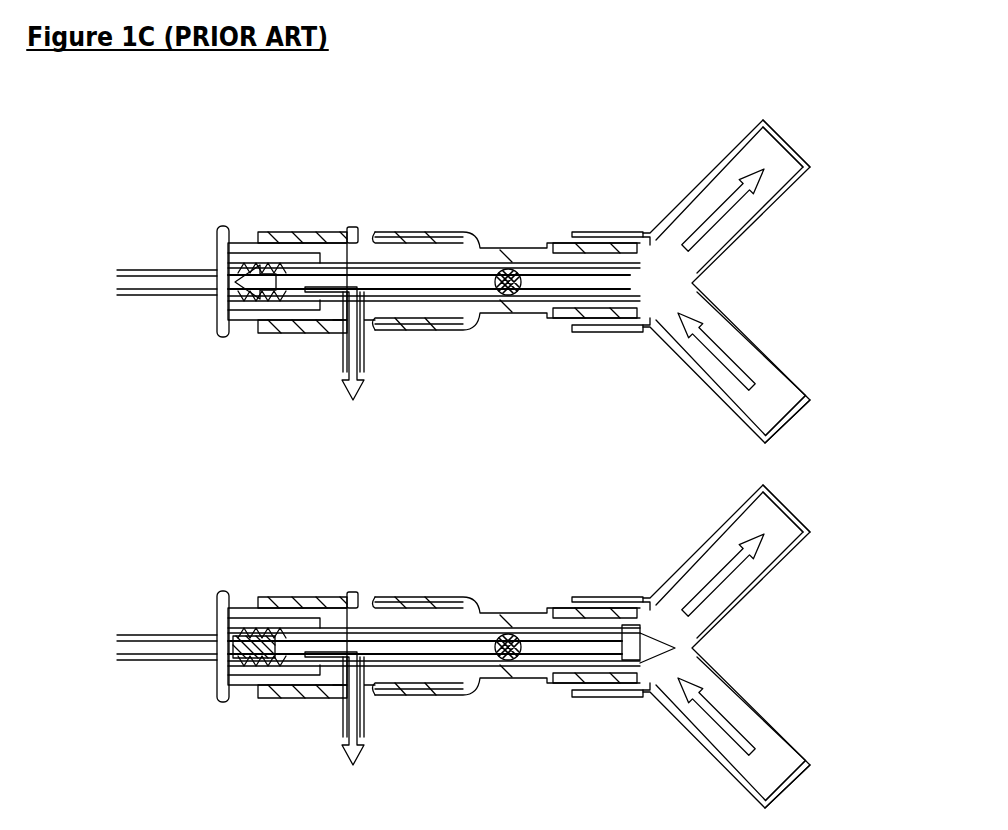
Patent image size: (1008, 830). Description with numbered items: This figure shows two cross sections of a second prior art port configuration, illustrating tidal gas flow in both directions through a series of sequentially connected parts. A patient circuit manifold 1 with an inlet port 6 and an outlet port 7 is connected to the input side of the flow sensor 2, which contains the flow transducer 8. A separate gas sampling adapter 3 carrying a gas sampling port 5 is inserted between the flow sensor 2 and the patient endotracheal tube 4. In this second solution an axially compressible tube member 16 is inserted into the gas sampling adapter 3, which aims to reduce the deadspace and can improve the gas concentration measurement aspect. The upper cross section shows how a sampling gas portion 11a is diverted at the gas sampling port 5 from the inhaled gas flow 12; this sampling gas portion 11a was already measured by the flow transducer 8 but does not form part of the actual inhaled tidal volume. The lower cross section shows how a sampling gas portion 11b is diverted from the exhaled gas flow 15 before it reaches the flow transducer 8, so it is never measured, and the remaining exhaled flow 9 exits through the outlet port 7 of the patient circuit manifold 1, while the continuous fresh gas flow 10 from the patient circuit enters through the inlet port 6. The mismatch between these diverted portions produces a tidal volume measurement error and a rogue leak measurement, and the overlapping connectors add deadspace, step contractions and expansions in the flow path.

The patient circuit manifold 1 is at (677, 206).
The flow sensor 2 is at (548, 231).
The gas sampling adapter 3 is at (320, 241).
The patient endotracheal tube 4 is at (182, 264).
The gas sampling port 5 is at (372, 358).
The inlet port 6 is at (792, 432).
The outlet port 7 is at (797, 140).
The flow transducer 8 is at (472, 232).
The exhaled flow 9 is at (733, 205).
The continuous fresh gas flow 10 is at (727, 350).
The sampling gas portion 11a is at (345, 387).
The sampling gas portion 11b is at (345, 756).
The inhaled gas flow 12 is at (232, 262).
The exhaled gas flow 15 is at (232, 627).
The axially compressible tube member 16 is at (275, 240).